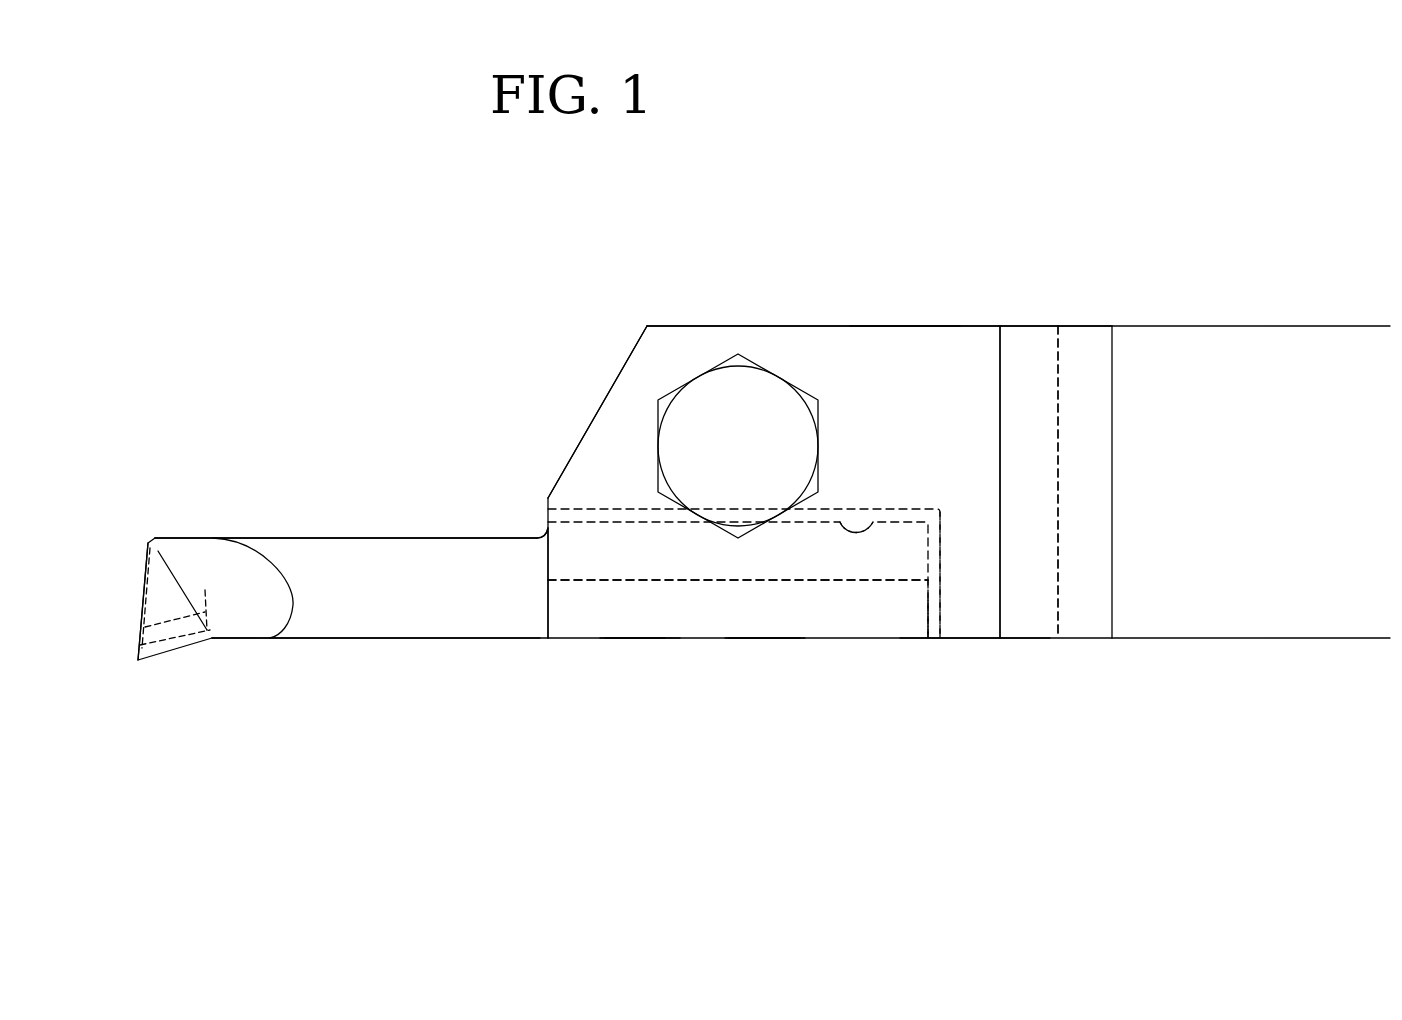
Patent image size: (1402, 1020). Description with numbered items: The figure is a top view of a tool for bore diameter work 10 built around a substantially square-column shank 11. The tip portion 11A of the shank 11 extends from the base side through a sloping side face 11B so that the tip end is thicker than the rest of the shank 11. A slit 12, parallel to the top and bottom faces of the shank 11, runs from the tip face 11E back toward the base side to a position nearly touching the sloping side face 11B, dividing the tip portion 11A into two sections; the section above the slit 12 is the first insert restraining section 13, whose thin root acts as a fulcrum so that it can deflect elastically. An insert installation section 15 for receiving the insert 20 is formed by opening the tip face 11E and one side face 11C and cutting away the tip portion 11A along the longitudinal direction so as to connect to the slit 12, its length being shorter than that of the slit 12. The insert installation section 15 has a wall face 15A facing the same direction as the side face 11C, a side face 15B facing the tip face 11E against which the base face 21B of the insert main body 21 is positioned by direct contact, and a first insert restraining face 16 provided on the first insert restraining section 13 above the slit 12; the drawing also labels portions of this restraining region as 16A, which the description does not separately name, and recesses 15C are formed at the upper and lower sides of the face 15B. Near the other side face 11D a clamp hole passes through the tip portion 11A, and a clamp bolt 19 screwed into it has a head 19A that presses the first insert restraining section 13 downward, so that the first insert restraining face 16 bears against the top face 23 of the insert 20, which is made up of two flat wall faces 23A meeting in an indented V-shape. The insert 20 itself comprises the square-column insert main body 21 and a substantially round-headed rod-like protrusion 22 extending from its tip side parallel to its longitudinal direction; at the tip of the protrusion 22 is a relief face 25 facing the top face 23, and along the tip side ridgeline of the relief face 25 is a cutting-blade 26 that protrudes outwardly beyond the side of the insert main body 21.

The tool for bore diameter work 10 is at (947, 146).
The shank 11 is at (1222, 318).
The tip portion 11A is at (871, 318).
The sloping side face 11B is at (1030, 352).
The one side face 11C is at (963, 640).
The other side face 11D is at (953, 326).
The tip face 11E is at (545, 620).
The slit 12 is at (1058, 600).
The first insert restraining section 13 is at (832, 355).
The insert installation section 15 is at (563, 656).
The wall face 15A is at (873, 508).
The side face 15B is at (930, 598).
The recesses 15C is at (918, 640).
The first insert restraining face 16 is at (687, 825).
The slit 16A is at (615, 625).
The clamp bolt 19 is at (718, 386).
The head 19A is at (694, 420).
The insert 20 is at (427, 526).
The insert main body 21 is at (672, 654).
The base face 21B is at (945, 568).
The protrusion 22 is at (320, 652).
The top face 23 is at (850, 772).
The flat wall faces 23A is at (733, 560).
The relief face 25 is at (165, 595).
The cutting-blade 26 is at (132, 645).